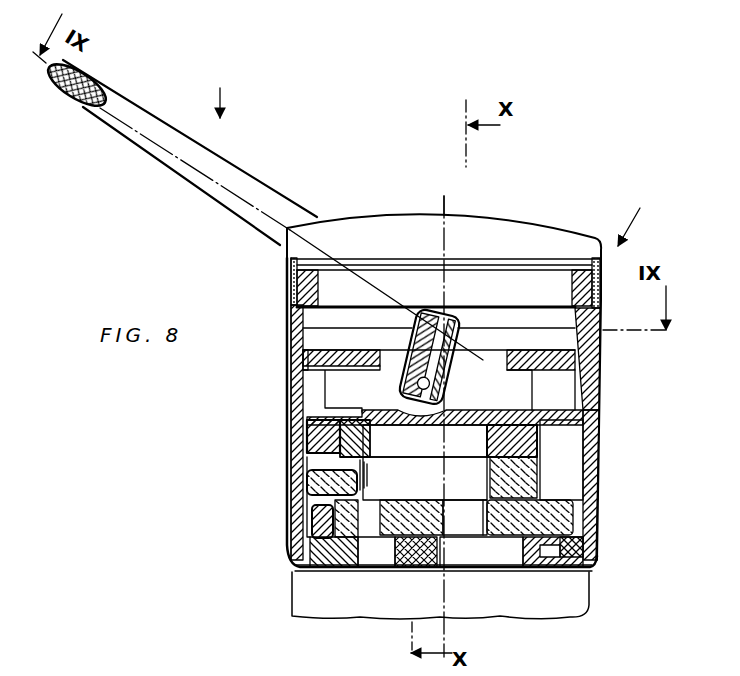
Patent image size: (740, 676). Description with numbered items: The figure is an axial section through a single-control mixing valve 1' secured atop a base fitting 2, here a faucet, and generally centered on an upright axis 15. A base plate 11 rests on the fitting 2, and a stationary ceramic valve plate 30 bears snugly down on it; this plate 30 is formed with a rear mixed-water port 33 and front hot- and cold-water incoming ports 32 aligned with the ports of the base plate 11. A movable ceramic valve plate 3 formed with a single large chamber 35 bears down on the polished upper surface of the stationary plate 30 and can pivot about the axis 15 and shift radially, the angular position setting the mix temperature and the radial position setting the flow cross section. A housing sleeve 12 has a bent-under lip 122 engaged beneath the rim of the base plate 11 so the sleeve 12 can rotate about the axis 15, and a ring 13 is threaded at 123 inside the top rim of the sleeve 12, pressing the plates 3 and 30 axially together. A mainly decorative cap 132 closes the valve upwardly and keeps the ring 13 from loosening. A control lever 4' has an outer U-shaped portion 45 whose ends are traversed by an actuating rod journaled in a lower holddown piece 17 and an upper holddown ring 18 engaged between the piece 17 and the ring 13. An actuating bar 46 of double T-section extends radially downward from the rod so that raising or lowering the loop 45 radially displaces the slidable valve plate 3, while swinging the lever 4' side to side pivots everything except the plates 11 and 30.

The base fitting 2 is at (560, 612).
The movable valve plate 3 is at (300, 482).
The base plate 11 is at (337, 565).
The housing sleeve 12 is at (292, 520).
The ring 13 is at (317, 282).
The upright axis 15 is at (447, 200).
The lower holddown piece 17 is at (598, 358).
The upper holddown ring 18 is at (569, 288).
The stationary ceramic valve plate 30 is at (368, 494).
The hot- and cold-water incoming ports 32 is at (376, 552).
The mixed-water port 33 is at (482, 558).
The chamber 35 is at (458, 472).
The U-shaped portion 45 is at (172, 168).
The actuating bar 46 is at (440, 360).
The bent-under lip 122 is at (583, 570).
The threading 123 is at (590, 322).
The cap 132 is at (540, 233).
The mixing valve 1' is at (639, 213).
The control lever 4' is at (233, 99).